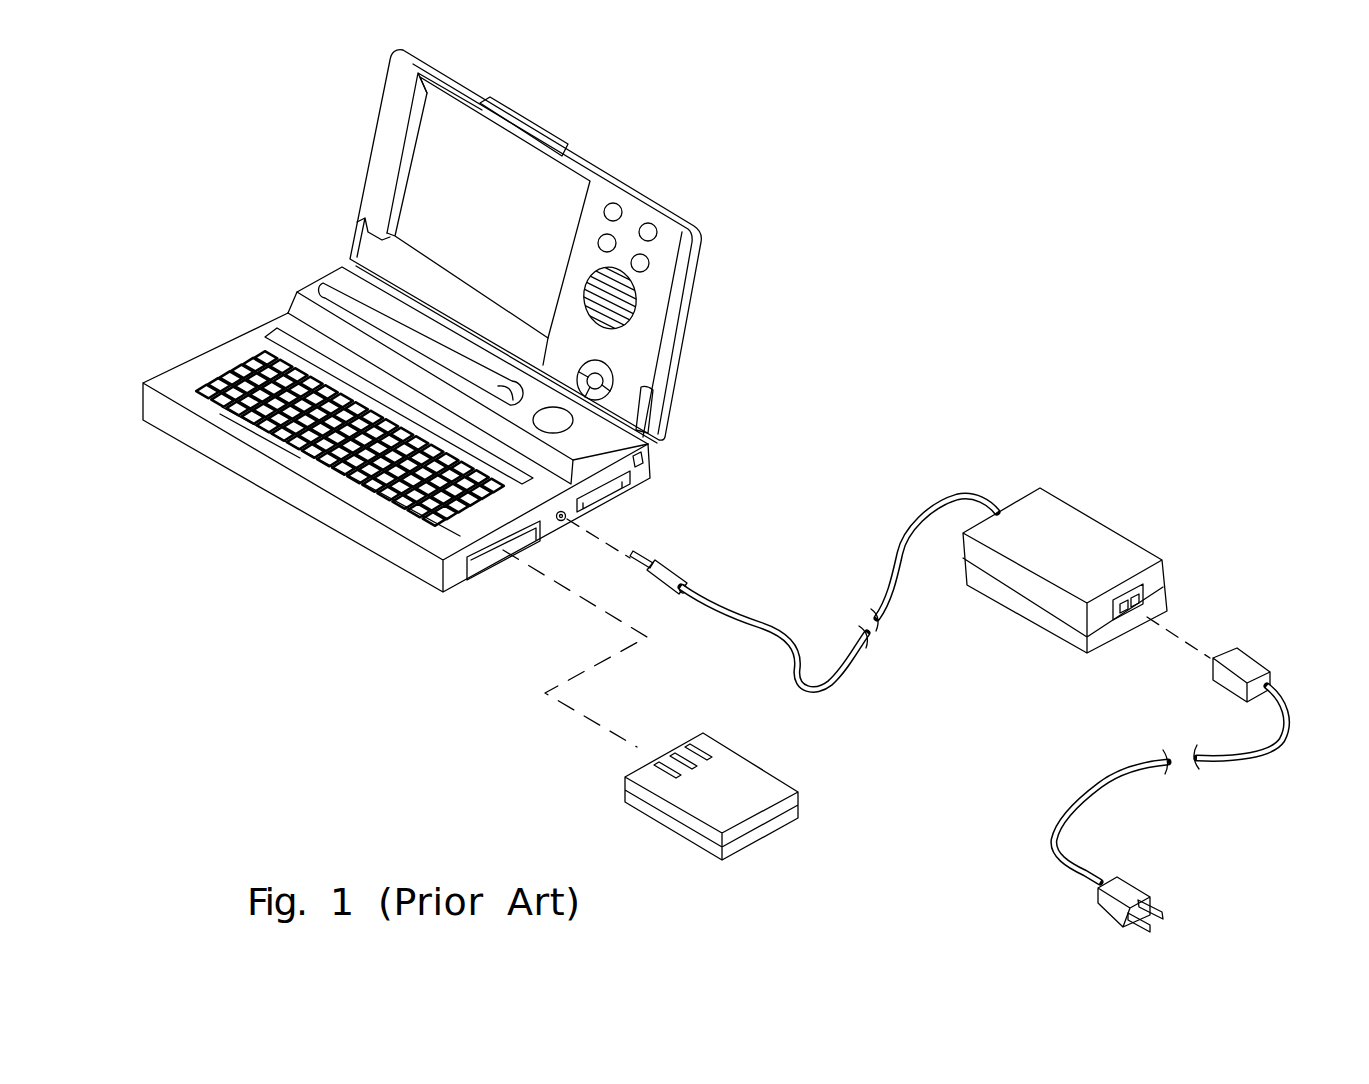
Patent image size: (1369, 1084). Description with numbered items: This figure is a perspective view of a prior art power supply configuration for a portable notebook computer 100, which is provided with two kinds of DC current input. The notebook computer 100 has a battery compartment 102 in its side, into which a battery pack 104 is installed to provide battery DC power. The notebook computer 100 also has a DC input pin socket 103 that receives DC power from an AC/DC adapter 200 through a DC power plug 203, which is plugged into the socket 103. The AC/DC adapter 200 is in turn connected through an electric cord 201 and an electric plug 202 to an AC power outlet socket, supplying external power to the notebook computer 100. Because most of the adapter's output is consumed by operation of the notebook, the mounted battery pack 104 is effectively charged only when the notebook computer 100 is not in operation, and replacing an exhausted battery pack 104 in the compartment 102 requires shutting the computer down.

The notebook computer 100 is at (461, 356).
The battery compartment 102 is at (484, 562).
The DC input pin socket 103 is at (562, 521).
The battery pack 104 is at (773, 773).
The AC/DC adapter 200 is at (1123, 537).
The electric cord 201 is at (1127, 767).
The electric plug 202 is at (1107, 913).
The DC power plug 203 is at (670, 570).